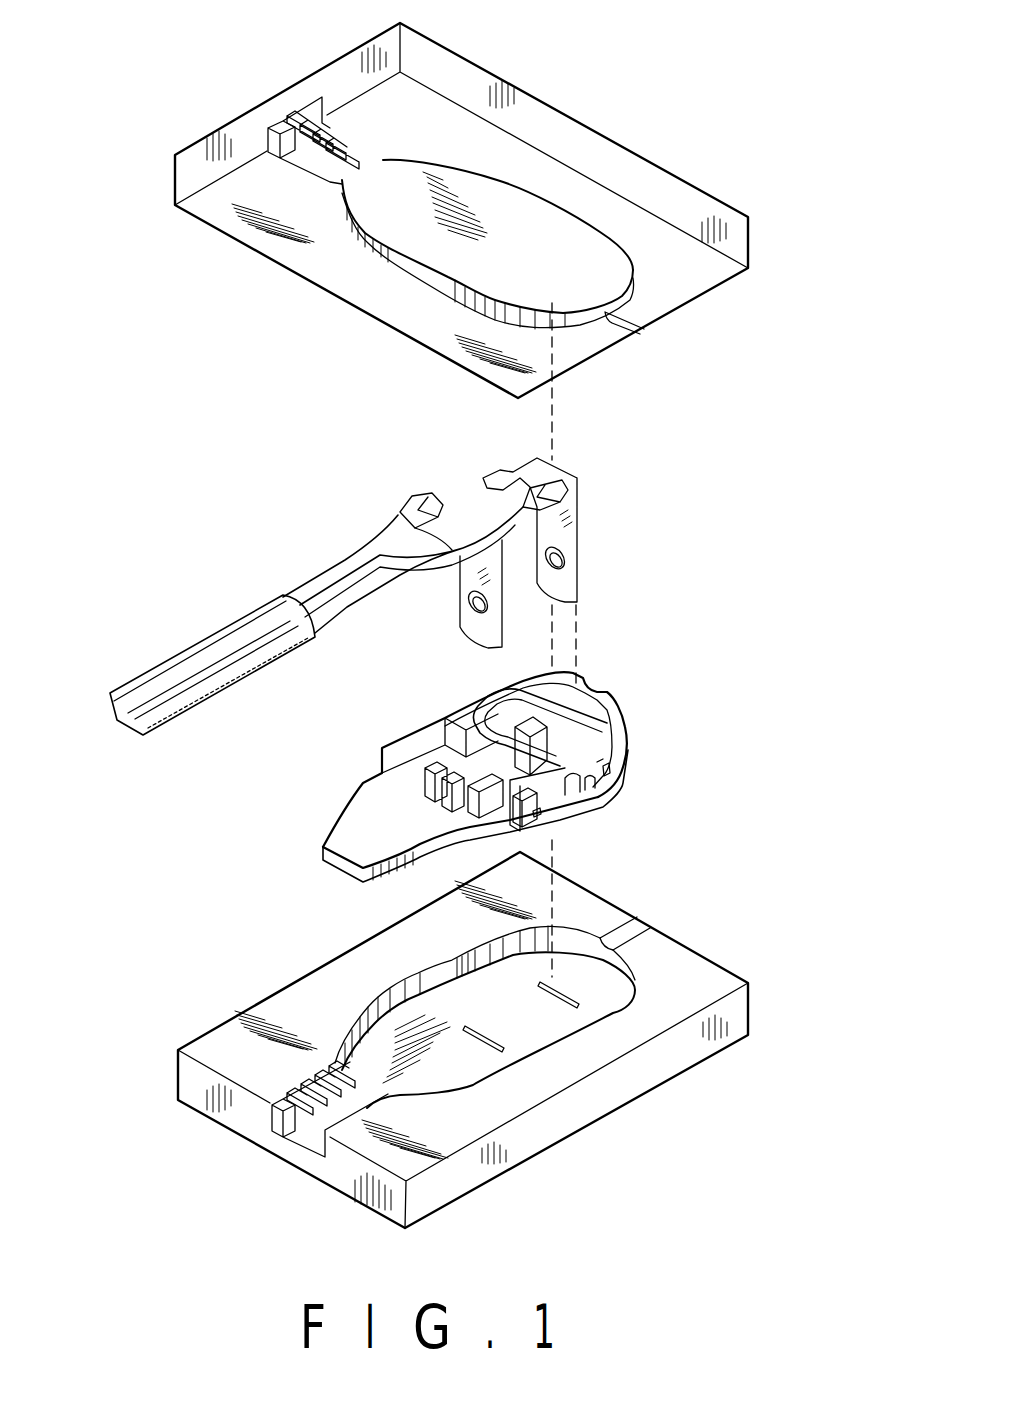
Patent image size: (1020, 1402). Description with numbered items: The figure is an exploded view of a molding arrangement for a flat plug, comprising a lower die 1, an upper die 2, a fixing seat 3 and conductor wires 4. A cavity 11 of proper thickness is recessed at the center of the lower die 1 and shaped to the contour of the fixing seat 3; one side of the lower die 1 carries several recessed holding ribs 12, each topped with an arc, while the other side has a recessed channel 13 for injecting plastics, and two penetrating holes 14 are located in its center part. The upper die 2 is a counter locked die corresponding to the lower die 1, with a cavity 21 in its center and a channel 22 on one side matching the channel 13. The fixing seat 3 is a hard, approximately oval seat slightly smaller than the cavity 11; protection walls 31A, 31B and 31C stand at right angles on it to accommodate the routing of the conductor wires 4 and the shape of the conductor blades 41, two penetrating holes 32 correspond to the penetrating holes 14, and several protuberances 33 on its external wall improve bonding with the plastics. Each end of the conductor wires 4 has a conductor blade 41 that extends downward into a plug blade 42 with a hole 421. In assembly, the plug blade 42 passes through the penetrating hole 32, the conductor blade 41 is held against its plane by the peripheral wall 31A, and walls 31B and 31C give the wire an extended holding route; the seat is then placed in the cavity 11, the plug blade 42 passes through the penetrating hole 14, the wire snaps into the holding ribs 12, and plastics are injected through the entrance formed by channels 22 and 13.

The lower die 1 is at (693, 968).
The cavity 11 is at (460, 1060).
The holding ribs 12 is at (313, 1105).
The channel 13 is at (632, 924).
The penetrating holes 14 is at (573, 997).
The upper die 2 is at (662, 178).
The cavity 21 is at (470, 195).
The channel 22 is at (632, 328).
The fixing seat 3 is at (607, 698).
The protection wall 31A is at (420, 737).
The protection wall 31B is at (467, 813).
The protection wall 31C is at (543, 807).
The penetrating holes 32 is at (457, 763).
The protuberances 33 is at (623, 772).
The conductor wires 4 is at (338, 612).
The conductor blade 41 is at (457, 505).
The plug blade 42 is at (468, 578).
The hole 421 is at (473, 603).